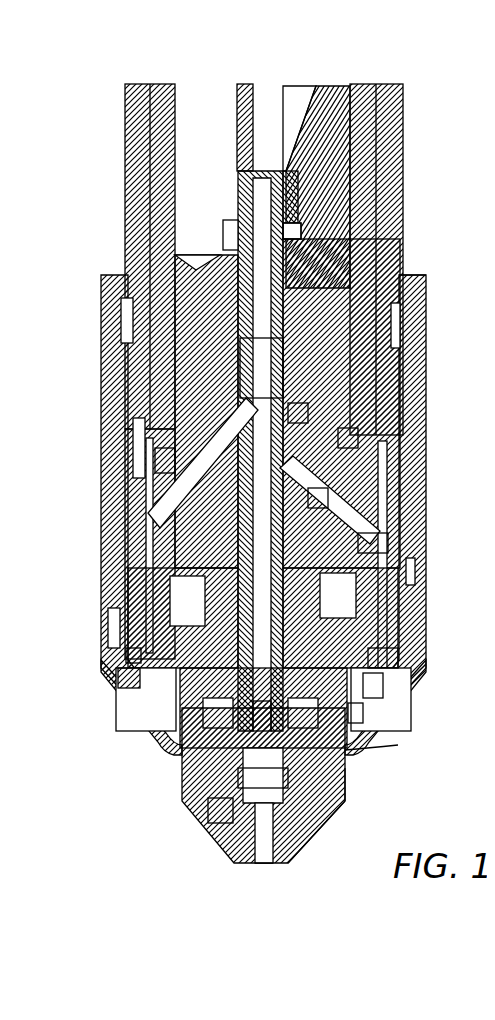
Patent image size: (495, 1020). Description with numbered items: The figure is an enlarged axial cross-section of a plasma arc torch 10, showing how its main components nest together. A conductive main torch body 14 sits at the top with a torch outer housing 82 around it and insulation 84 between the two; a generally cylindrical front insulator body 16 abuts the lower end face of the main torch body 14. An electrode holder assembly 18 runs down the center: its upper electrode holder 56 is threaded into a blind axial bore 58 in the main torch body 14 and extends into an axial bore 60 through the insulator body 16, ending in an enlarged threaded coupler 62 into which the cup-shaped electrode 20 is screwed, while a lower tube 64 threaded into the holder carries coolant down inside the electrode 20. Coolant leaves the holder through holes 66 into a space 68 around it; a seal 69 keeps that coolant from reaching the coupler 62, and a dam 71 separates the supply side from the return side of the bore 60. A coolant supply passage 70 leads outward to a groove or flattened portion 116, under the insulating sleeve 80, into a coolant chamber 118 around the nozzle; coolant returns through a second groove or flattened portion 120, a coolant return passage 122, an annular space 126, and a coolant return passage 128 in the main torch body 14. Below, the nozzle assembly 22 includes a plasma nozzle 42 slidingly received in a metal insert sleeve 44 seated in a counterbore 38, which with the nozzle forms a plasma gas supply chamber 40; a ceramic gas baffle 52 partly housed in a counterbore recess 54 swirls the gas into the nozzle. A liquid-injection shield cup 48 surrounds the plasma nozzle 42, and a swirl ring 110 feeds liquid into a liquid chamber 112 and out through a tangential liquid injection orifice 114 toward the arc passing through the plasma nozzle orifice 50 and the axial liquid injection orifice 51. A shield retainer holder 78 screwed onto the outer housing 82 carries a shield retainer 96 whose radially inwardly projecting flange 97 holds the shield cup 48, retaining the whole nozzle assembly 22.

The plasma arc torch 10 is at (50, 245).
The main torch body 14 is at (340, 160).
The front insulator body 16 is at (340, 375).
The electrode holder assembly 18 is at (228, 392).
The electrode 20 is at (168, 735).
The nozzle assembly 22 is at (340, 772).
The counterbore 38 is at (130, 585).
The plasma gas supply chamber 40 is at (345, 578).
The plasma nozzle 42 is at (190, 785).
The metal insert sleeve 44 is at (120, 650).
The liquid-injection shield cup 48 is at (312, 800).
The plasma nozzle orifice 50 is at (245, 845).
The axial liquid injection orifice 51 is at (262, 856).
The ceramic gas baffle 52 is at (150, 548).
The counterbore recess 54 is at (365, 535).
The upper electrode holder 56 is at (293, 222).
The blind axial bore 58 is at (238, 150).
The axial bore 60 is at (230, 350).
The coupler 62 is at (125, 690).
The lower tube 64 is at (365, 465).
The holes 66 is at (350, 430).
The space 68 is at (145, 450).
The seal 69 is at (160, 505).
The coolant supply passage 70 is at (365, 490).
The dam 71 is at (350, 405).
The shield retainer holder 78 is at (392, 315).
The insulating sleeve 80 is at (385, 650).
The torch outer housing 82 is at (380, 185).
The insulation 84 is at (390, 262).
The shield retainer 96 is at (360, 705).
The radially inwardly projecting flange 97 is at (392, 738).
The swirl ring 110 is at (200, 765).
The liquid chamber 112 is at (195, 815).
The tangential liquid injection orifice 114 is at (290, 845).
The groove or flattened portion 116 is at (405, 600).
The coolant chamber 118 is at (370, 680).
The second groove or flattened portion 120 is at (112, 620).
The coolant return passage 122 is at (130, 420).
The annular space 126 is at (215, 225).
The coolant return passage 128 is at (185, 135).